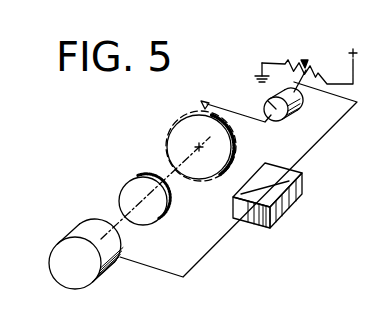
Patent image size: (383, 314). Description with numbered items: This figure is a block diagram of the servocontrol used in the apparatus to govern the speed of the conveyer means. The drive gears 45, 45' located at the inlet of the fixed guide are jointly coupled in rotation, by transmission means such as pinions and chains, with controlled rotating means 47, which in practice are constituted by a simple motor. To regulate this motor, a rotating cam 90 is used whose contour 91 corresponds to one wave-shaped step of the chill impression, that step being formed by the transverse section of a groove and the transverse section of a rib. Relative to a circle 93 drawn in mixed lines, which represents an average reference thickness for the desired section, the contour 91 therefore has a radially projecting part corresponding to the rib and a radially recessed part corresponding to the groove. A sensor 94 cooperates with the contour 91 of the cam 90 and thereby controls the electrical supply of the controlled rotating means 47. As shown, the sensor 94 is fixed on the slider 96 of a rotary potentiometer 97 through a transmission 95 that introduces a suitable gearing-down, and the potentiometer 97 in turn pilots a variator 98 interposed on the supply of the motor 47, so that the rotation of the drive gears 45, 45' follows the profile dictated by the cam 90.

The drive gear 45 is at (119, 191).
The drive gear 45' is at (154, 196).
The controlled rotating means 47 is at (75, 231).
The rotating cam 90 is at (228, 155).
The contour 91 is at (190, 109).
The circle 93 is at (203, 183).
The sensor 94 is at (229, 110).
The transmission 95 is at (297, 108).
The slider 96 is at (319, 72).
The rotary potentiometer 97 is at (304, 60).
The variator 98 is at (292, 200).